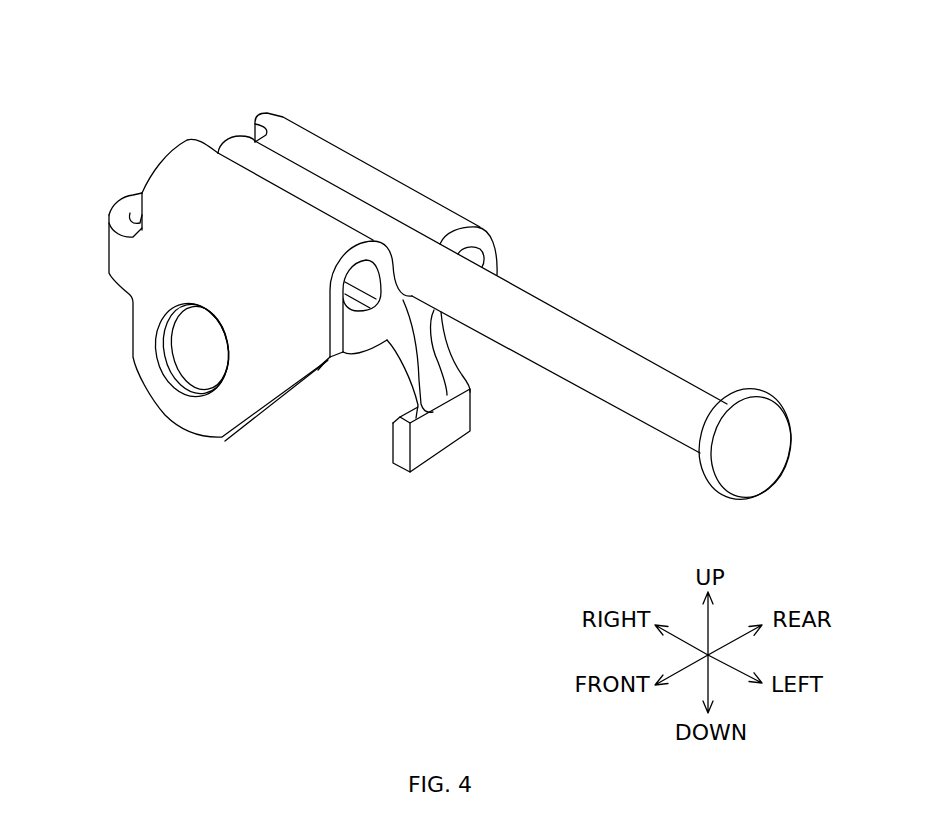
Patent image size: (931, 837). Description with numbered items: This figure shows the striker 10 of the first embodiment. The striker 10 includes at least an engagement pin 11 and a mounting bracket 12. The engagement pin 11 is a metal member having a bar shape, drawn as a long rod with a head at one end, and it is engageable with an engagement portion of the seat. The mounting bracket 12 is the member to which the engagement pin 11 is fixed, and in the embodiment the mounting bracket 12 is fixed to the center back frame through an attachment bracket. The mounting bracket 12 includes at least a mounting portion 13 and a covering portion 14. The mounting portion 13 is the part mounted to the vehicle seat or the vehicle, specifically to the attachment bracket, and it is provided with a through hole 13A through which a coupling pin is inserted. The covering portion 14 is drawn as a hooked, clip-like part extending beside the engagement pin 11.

The striker 10 is at (517, 78).
The engagement pin 11 is at (658, 405).
The mounting bracket 12 is at (270, 368).
The mounting portion 13 is at (147, 337).
The through hole 13A is at (187, 390).
The covering portion 14 is at (410, 367).